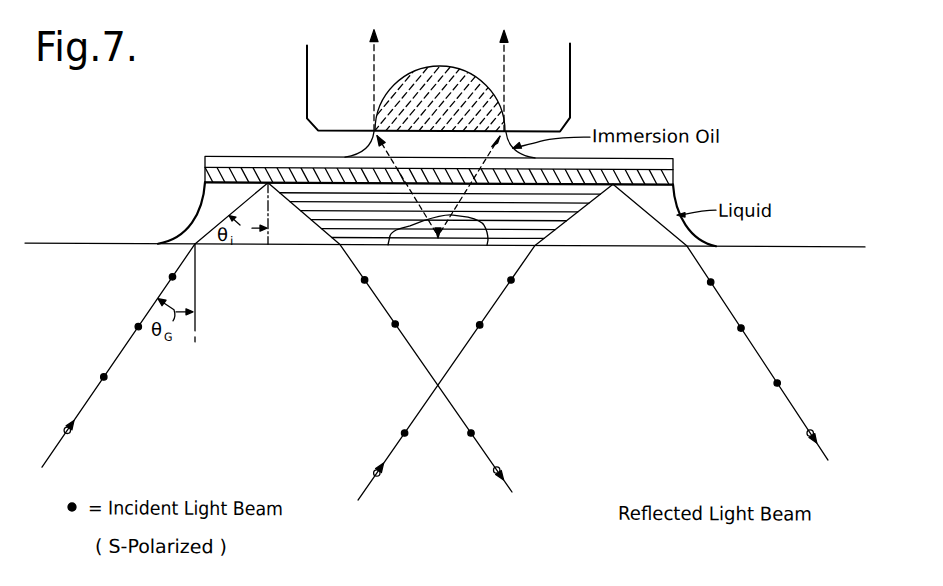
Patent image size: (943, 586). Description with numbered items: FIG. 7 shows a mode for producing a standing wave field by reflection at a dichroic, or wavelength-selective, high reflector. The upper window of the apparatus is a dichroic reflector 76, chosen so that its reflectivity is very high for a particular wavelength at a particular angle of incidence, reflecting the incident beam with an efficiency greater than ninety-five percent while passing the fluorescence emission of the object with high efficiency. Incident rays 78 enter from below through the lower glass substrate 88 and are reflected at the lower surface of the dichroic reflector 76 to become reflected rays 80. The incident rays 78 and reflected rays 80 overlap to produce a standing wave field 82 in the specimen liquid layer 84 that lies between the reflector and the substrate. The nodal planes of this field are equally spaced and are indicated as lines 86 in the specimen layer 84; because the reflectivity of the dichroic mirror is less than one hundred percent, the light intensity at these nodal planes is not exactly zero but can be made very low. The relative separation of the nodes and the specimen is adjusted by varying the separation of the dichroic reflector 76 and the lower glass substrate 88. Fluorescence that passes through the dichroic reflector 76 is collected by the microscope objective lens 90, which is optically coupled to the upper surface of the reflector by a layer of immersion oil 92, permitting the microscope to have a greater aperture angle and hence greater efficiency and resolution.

The dichroic reflector 76 is at (226, 159).
The incident rays 78 is at (86, 400).
The reflected rays 80 is at (483, 445).
The standing wave field 82 is at (522, 220).
The specimen liquid layer 84 is at (197, 213).
The nodal planes 86 is at (566, 198).
The lower glass substrate 88 is at (853, 278).
The microscope objective lens 90 is at (436, 80).
The immersion oil 92 is at (367, 144).